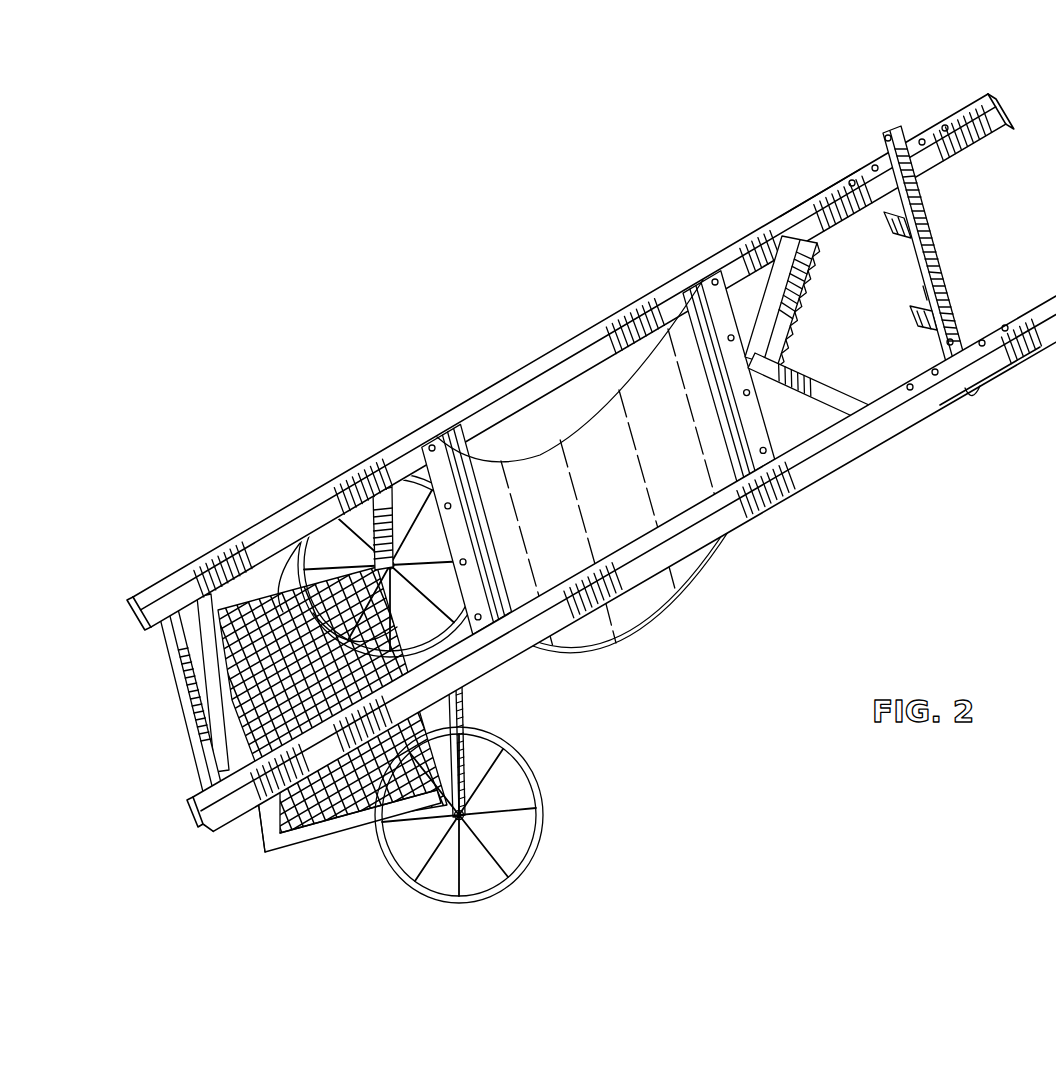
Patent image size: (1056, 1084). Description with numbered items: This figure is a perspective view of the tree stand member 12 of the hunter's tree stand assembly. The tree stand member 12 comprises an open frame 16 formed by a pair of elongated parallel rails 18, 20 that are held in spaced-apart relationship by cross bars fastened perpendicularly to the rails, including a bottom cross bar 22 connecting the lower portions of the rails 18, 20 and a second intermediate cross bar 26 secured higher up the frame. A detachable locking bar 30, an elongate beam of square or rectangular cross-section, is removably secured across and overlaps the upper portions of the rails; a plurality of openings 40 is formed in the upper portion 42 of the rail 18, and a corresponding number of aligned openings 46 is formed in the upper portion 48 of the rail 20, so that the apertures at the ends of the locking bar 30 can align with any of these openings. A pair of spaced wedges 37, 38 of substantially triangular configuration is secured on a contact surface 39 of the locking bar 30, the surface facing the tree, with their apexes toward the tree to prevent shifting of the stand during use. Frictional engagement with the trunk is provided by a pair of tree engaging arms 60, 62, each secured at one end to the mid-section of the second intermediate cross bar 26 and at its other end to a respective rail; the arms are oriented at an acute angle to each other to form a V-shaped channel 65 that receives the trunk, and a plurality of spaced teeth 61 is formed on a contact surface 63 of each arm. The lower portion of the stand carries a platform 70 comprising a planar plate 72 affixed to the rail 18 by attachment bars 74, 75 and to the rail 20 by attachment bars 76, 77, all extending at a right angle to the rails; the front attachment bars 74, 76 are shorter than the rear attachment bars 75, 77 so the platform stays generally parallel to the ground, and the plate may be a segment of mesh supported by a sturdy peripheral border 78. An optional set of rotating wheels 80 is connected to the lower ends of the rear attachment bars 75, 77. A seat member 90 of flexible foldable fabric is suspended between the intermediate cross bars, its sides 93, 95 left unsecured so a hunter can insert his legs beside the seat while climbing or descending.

The tree stand member 12 is at (563, 296).
The open frame 16 is at (668, 278).
The rail 18 is at (464, 402).
The rail 20 is at (621, 548).
The bottom cross bar 22 is at (168, 706).
The second intermediate cross bar 26 is at (719, 266).
The detachable locking bar 30 is at (936, 250).
The wedge 37 is at (886, 229).
The wedge 38 is at (917, 330).
The contact surface 39 is at (922, 290).
The openings 40 is at (849, 181).
The upper portion 42 is at (794, 208).
The openings 46 is at (983, 340).
The upper portion 48 is at (990, 382).
The tree engaging arm 60 is at (797, 273).
The teeth 61 is at (812, 271).
The tree engaging arm 62 is at (806, 402).
The contact surface 63 is at (781, 325).
The V-shaped channel 65 is at (830, 312).
The platform 70 is at (319, 852).
The planar plate 72 is at (343, 840).
The attachment bar 74 is at (217, 577).
The attachment bar 75 is at (385, 500).
The attachment bar 76 is at (268, 832).
The attachment bar 77 is at (465, 702).
The peripheral border 78 is at (300, 548).
The rotating wheels 80 is at (542, 786).
The seat member 90 is at (591, 484).
The side 93 is at (579, 436).
The side 95 is at (684, 588).